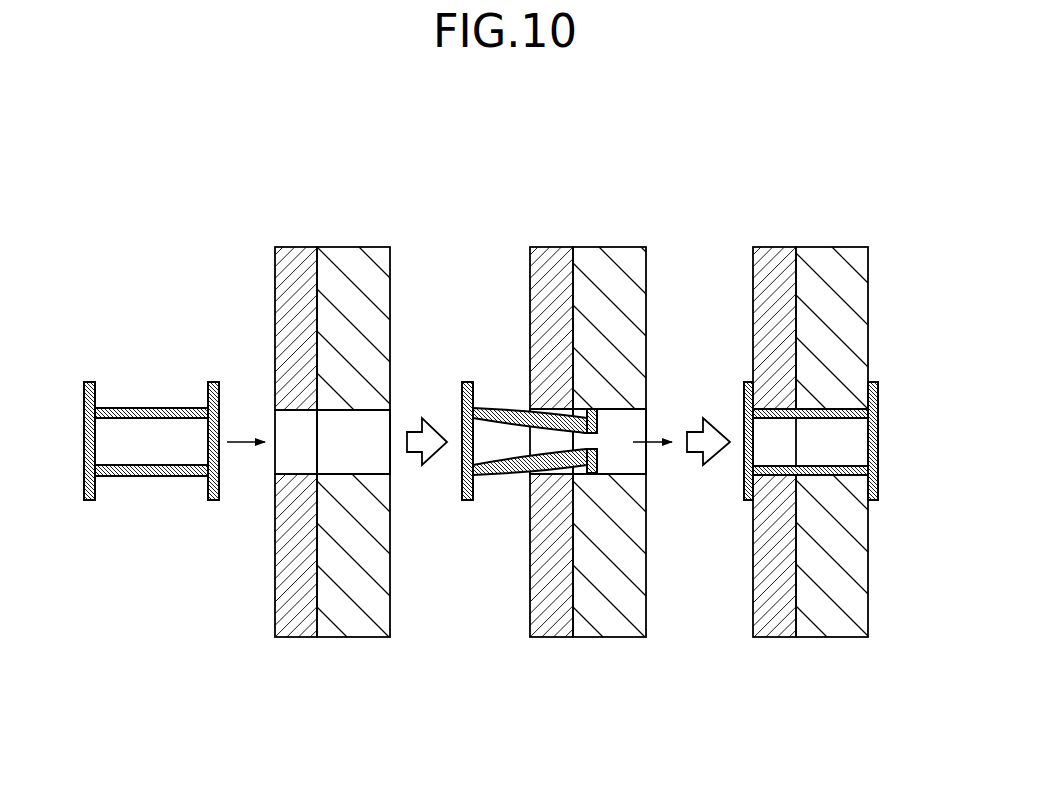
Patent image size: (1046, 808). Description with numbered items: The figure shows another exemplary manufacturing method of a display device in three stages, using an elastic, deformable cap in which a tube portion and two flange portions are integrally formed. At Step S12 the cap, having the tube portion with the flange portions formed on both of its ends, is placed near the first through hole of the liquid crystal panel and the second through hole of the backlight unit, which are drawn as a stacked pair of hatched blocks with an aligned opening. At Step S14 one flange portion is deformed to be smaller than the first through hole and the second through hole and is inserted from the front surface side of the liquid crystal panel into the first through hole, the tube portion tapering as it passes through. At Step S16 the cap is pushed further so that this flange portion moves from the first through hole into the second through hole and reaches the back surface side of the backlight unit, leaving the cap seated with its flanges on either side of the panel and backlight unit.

The Step S12 is at (252, 430).
The Step S14 is at (586, 430).
The Step S16 is at (822, 430).